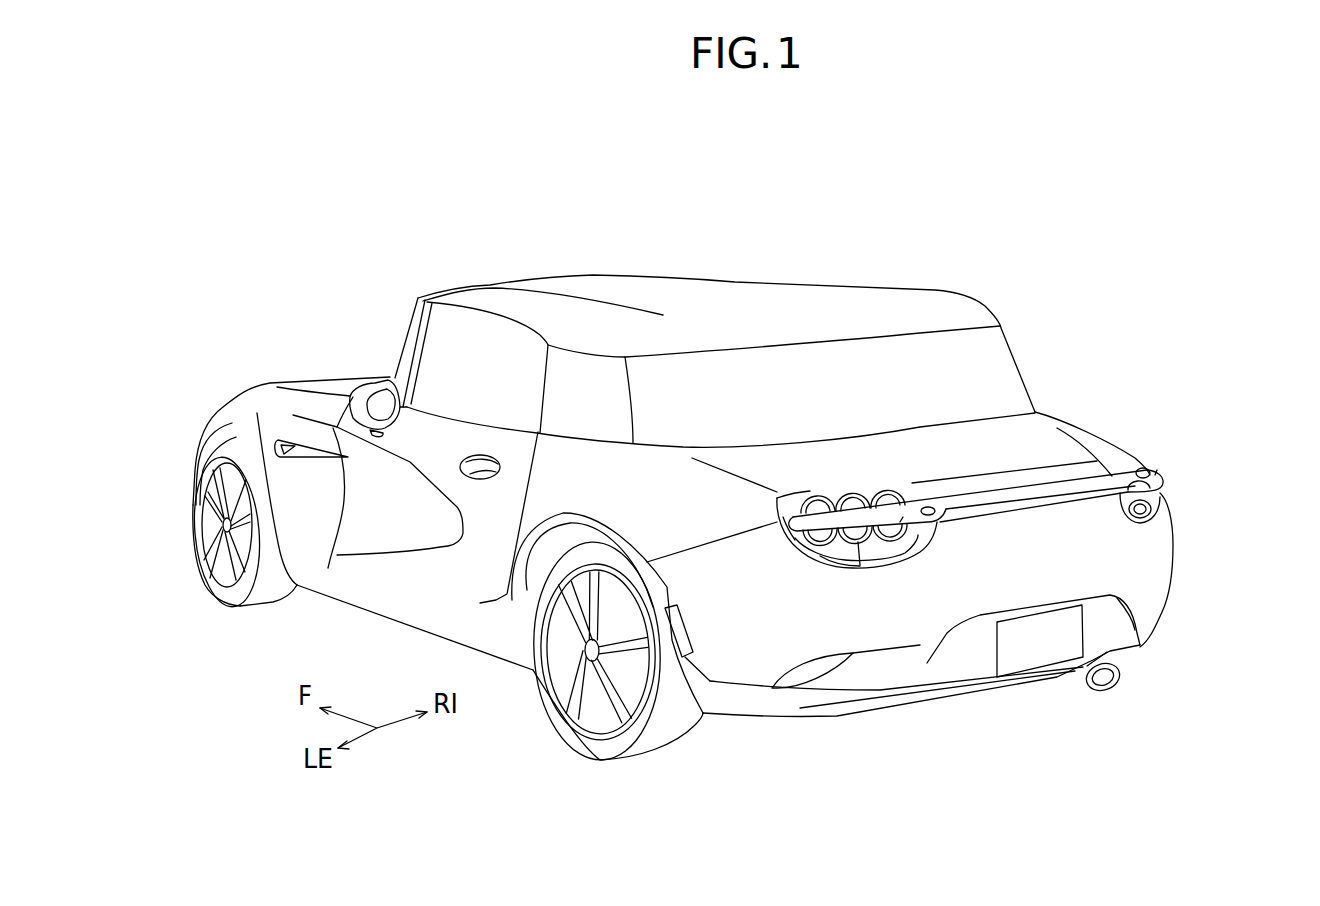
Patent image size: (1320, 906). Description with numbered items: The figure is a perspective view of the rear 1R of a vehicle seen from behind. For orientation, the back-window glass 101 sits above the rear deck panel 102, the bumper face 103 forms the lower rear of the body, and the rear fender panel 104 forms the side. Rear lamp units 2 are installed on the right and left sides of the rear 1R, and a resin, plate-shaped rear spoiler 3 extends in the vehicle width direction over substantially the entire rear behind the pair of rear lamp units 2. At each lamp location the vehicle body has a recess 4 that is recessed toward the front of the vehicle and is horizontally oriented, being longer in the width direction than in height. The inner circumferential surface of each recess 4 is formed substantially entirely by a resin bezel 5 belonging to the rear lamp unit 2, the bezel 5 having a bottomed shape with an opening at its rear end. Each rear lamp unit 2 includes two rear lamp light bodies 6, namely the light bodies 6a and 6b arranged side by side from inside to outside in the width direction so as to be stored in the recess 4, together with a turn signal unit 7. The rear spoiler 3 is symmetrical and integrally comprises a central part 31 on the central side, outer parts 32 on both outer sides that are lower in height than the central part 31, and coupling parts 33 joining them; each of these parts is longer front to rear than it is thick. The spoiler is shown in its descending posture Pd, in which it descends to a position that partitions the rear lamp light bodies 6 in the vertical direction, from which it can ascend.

The rear of the vehicle 1R is at (1109, 420).
The rear lamp unit 2 is at (1009, 543).
The rear spoiler 3 is at (992, 479).
The central part 31 is at (1018, 511).
The outer part 32 is at (903, 515).
The coupling part 33 is at (920, 506).
The recess 4 is at (860, 560).
The bezel 5 is at (827, 550).
The rear lamp light body 6 is at (1013, 508).
The rear lamp light body 6a is at (905, 558).
The rear lamp light body 6b is at (837, 497).
The turn signal unit 7 is at (785, 530).
The back-window glass 101 is at (998, 360).
The rear deck panel 102 is at (1068, 450).
The bumper face 103 is at (1148, 580).
The rear fender panel 104 is at (664, 478).
The descending posture Pd is at (1044, 478).